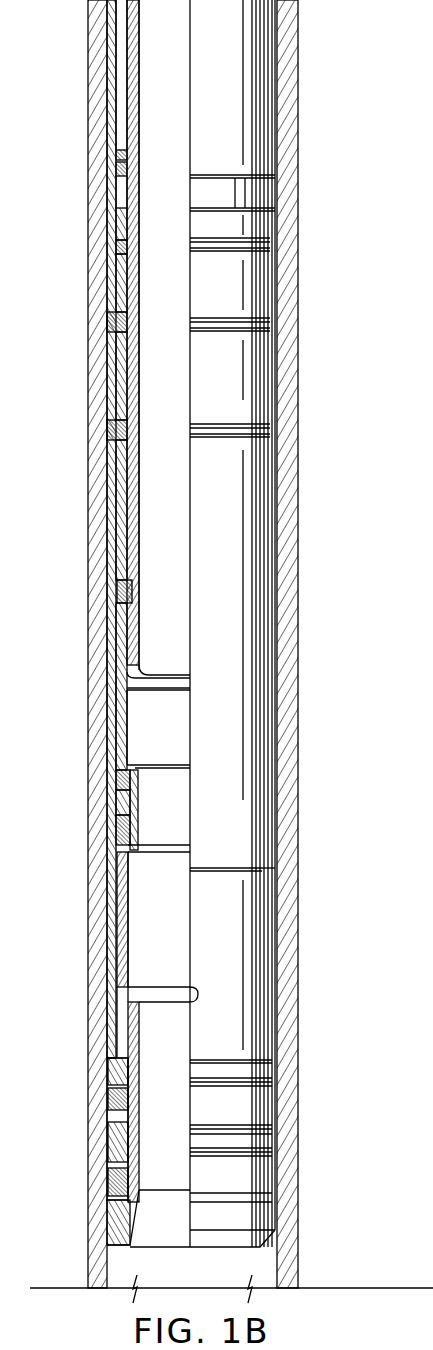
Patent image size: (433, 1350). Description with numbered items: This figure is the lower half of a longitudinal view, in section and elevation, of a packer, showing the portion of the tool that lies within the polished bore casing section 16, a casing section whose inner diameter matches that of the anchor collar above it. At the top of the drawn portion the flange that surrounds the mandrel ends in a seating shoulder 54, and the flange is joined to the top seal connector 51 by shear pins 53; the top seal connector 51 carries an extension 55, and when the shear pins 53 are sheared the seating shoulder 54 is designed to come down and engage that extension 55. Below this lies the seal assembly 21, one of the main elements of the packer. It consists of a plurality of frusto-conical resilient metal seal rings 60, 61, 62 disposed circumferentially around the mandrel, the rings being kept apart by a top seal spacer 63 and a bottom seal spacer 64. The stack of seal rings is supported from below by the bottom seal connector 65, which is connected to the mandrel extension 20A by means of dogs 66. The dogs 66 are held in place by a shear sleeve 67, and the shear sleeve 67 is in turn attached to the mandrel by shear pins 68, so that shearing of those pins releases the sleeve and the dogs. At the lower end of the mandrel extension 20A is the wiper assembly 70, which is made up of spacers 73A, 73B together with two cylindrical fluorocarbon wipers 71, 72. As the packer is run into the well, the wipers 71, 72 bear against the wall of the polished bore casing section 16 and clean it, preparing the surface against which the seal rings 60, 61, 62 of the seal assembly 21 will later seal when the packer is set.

The polished bore casing section 16 is at (93, 360).
The seal assembly 21 is at (78, 297).
The seating shoulder 54 is at (107, 85).
The extension 55 is at (113, 152).
The shear pins 53 is at (117, 167).
The top seal connector 51 is at (108, 222).
The seal ring 60 is at (115, 245).
The top seal spacer 63 is at (108, 272).
The seal ring 61 is at (110, 320).
The bottom seal spacer 64 is at (113, 387).
The seal ring 62 is at (113, 427).
The bottom seal connector 65 is at (110, 464).
The mandrel extension 20A is at (118, 728).
The shear pins 68 is at (120, 778).
The shear sleeve 67 is at (128, 800).
The dogs 66 is at (120, 826).
The wiper assembly 70 is at (75, 1127).
The spacer 73A is at (110, 1064).
The wiper 71 is at (112, 1100).
The spacer 73B is at (110, 1140).
The wiper 72 is at (110, 1178).